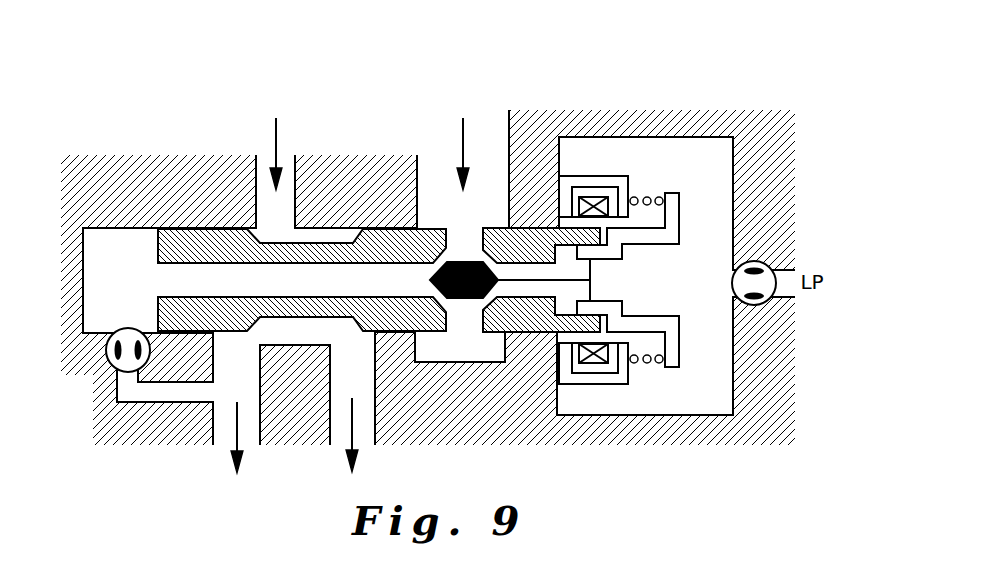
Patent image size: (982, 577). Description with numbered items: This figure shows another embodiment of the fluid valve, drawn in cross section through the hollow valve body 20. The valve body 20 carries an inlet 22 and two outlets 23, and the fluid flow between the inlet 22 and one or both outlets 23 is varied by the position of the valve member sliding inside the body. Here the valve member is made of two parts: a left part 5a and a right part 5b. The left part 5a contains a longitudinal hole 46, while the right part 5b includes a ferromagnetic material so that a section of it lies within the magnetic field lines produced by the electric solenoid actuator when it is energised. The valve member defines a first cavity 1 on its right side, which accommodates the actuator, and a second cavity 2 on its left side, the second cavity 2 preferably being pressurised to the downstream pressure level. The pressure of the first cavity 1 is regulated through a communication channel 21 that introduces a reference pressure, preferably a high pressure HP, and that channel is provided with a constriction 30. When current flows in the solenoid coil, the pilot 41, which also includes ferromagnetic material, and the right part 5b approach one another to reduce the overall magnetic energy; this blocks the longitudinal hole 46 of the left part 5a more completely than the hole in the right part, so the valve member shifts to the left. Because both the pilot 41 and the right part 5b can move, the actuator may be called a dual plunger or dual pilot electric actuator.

The first cavity 1 is at (683, 173).
The second cavity 2 is at (111, 293).
The left part of valve member 5a is at (195, 237).
The right part of valve member 5b is at (497, 236).
The hollow valve body 20 is at (762, 155).
The communication channel 21 is at (444, 143).
The inlet 22 is at (275, 142).
The outlets 23 is at (294, 448).
The constriction 30 is at (116, 333).
The pilot 41 is at (672, 223).
The longitudinal hole 46 is at (283, 212).